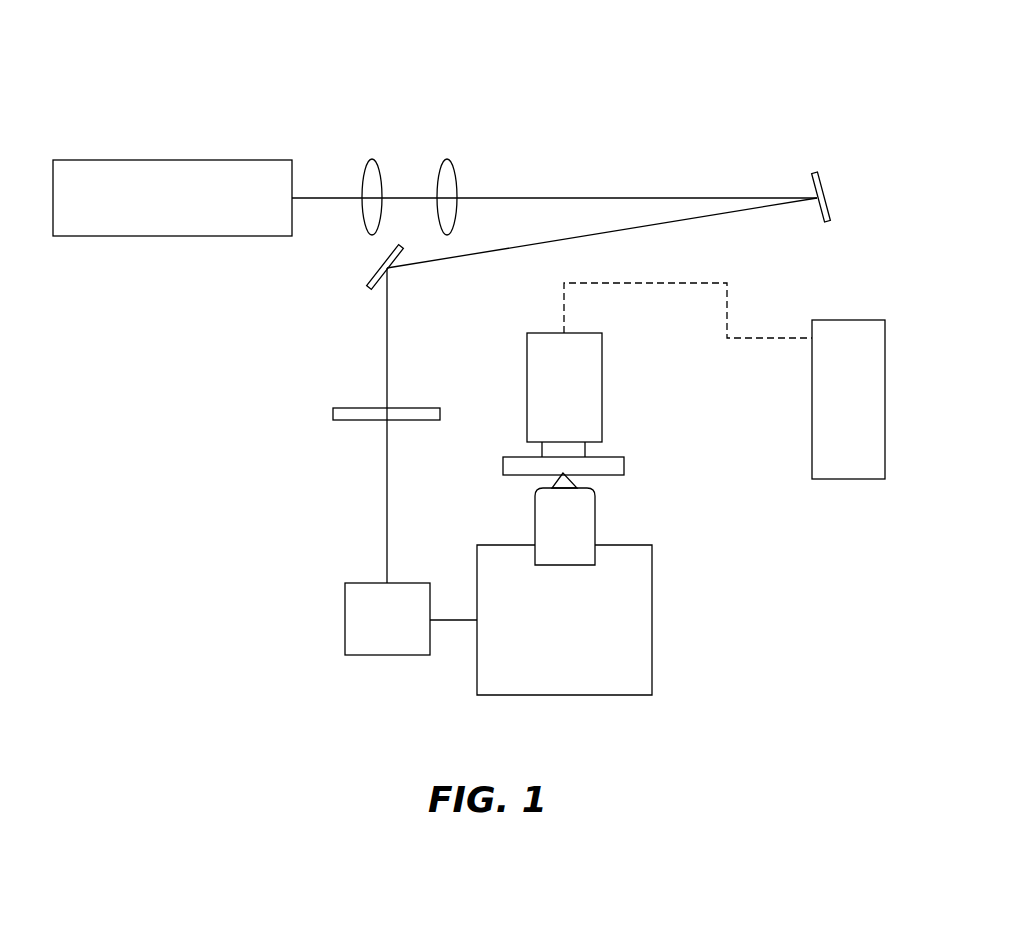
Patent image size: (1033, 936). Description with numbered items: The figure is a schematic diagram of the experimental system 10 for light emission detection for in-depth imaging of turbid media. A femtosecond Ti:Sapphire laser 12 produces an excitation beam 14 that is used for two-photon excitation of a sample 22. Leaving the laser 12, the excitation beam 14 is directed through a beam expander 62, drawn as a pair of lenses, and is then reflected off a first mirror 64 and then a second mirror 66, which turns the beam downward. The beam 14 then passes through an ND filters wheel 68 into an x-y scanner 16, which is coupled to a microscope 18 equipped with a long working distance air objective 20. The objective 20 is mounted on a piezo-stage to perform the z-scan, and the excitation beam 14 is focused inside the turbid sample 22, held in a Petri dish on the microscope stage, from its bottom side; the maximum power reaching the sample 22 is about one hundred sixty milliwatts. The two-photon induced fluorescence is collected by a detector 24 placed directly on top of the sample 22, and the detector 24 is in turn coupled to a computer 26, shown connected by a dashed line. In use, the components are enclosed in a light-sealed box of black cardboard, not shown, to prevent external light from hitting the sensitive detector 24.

The experimental system 10 is at (247, 417).
The femtosecond Ti:Sapphire laser 12 is at (195, 160).
The excitation beam 14 is at (573, 197).
The x-y scanner 16 is at (348, 647).
The microscope 18 is at (640, 615).
The air objective 20 is at (582, 517).
The sample 22 is at (623, 460).
The detector 24 is at (595, 372).
The computer 26 is at (853, 467).
The beam expander 62 is at (445, 157).
The first mirror 64 is at (822, 178).
The second mirror 66 is at (377, 272).
The ND filters wheel 68 is at (350, 420).